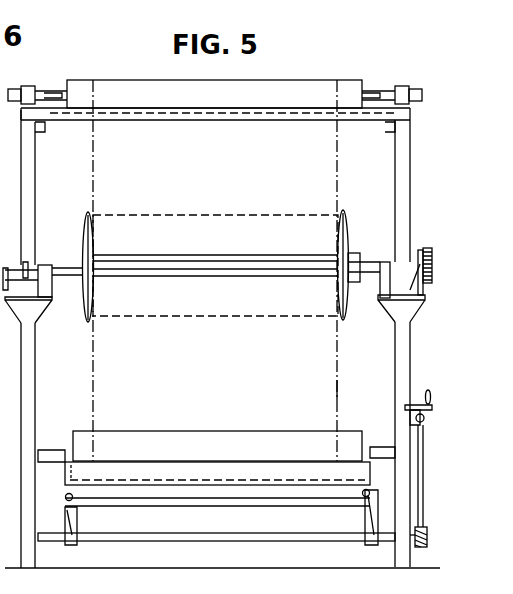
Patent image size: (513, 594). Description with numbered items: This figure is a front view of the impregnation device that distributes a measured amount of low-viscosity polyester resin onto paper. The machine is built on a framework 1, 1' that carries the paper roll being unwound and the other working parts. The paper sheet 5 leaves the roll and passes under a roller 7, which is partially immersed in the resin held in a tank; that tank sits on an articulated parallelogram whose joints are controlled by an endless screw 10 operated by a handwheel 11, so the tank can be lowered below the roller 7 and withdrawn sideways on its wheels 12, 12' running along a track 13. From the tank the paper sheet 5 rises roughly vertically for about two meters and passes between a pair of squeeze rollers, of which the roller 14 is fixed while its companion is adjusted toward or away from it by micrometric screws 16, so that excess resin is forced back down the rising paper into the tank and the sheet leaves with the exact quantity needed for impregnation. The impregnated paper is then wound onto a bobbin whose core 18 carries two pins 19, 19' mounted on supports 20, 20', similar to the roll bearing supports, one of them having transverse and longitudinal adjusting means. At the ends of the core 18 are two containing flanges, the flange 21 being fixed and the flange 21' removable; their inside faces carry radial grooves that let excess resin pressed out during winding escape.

The framework 1 is at (220, 338).
The framework 1' is at (418, 343).
The paper sheet 5 is at (333, 392).
The roller 7 is at (296, 432).
The endless screw 10 is at (427, 541).
The handwheel 11 is at (428, 405).
The wheel 12 is at (90, 520).
The wheel 12' is at (411, 512).
The track 13 is at (298, 500).
The squeeze roller 14 is at (350, 85).
The micrometric screw 16 is at (220, 308).
The core 18 is at (283, 270).
The pin 19 is at (37, 267).
The pin 19' is at (390, 261).
The support 20 is at (35, 319).
The support 20' is at (387, 306).
The flange 21 is at (68, 267).
The flange 21' is at (358, 255).